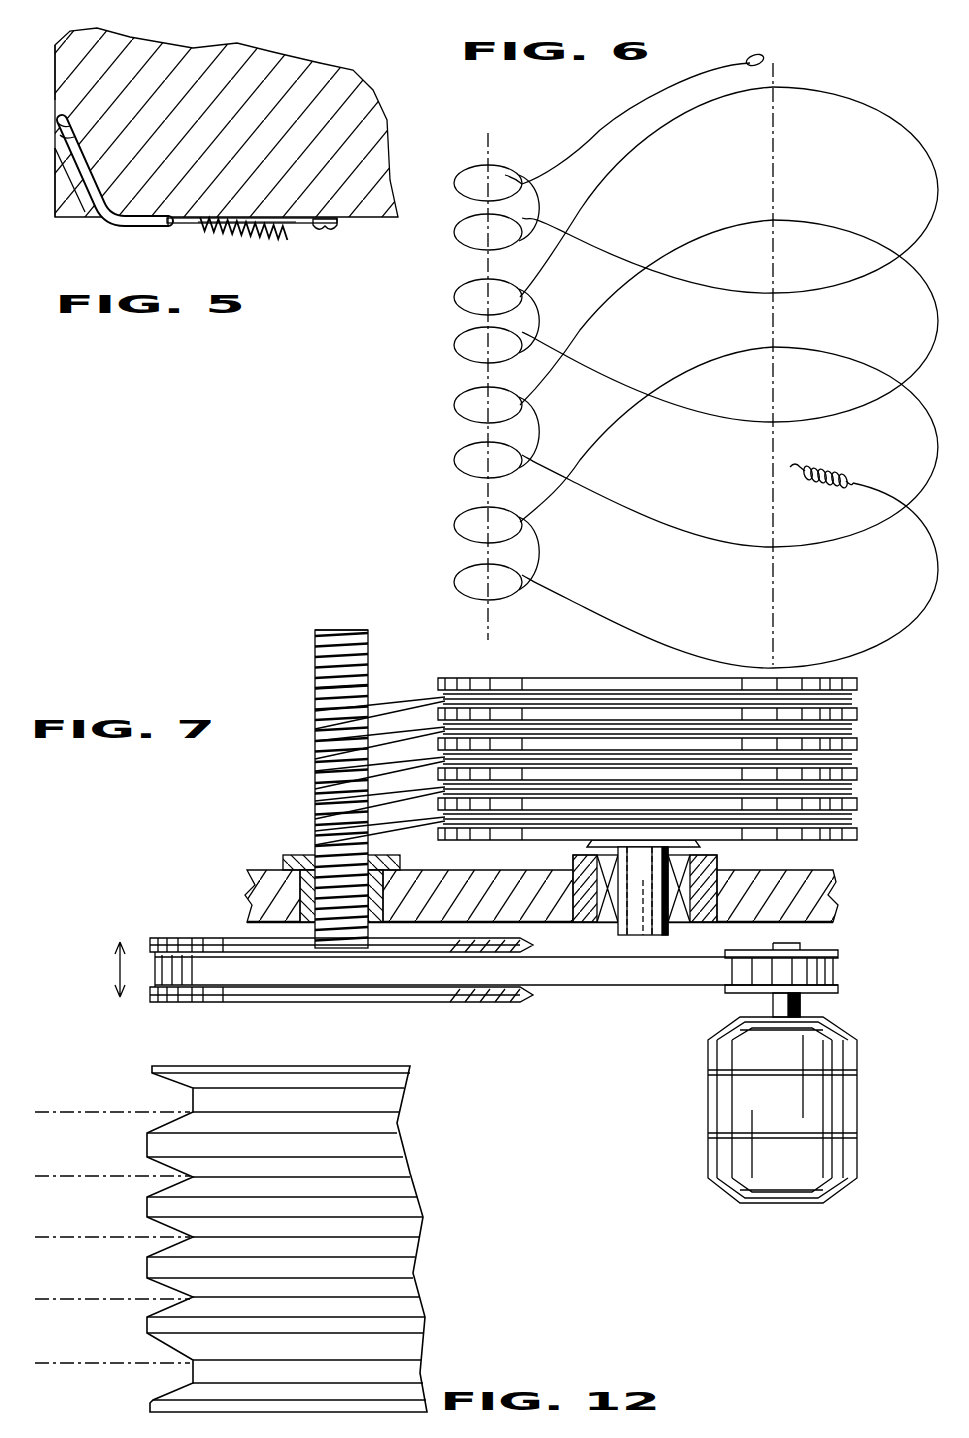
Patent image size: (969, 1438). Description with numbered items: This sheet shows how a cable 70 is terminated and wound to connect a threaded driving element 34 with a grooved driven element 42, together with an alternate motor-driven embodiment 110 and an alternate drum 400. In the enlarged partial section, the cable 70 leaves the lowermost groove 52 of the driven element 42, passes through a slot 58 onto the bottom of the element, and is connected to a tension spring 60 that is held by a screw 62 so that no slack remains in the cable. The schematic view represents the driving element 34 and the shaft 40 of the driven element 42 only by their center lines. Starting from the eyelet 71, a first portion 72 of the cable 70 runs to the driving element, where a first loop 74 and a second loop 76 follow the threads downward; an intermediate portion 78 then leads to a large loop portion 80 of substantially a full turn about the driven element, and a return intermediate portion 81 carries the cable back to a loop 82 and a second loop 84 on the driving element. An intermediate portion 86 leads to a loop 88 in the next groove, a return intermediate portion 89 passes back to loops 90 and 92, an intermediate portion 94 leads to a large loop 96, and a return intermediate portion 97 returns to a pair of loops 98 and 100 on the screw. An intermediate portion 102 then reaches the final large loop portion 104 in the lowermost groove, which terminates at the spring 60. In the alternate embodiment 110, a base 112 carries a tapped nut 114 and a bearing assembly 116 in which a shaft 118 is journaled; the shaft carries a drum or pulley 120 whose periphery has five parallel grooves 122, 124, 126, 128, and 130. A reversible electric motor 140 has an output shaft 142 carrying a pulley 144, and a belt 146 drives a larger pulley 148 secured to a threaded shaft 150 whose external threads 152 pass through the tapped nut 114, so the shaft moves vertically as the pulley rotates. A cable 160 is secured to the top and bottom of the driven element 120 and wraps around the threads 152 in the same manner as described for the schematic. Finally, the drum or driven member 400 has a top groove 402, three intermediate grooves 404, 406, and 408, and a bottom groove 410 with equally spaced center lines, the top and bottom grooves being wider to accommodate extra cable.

In FIG. 5, the driven element 42 is at (360, 96).
In FIG. 5, the groove 52 is at (58, 117).
In FIG. 5, the slot 58 is at (78, 222).
In FIG. 5, the tension spring 60 is at (255, 232).
In FIG. 6, the tension spring 60 is at (828, 470).
In FIG. 5, the screw 62 is at (336, 228).
In FIG. 6, the eyelet 71 is at (762, 57).
In FIG. 6, the cable 70 is at (610, 110).
In FIG. 6, the driving element 34 is at (490, 166).
In FIG. 6, the shaft 40 is at (778, 175).
In FIG. 6, the first portion 72 is at (538, 185).
In FIG. 6, the first loop 74 is at (460, 186).
In FIG. 6, the second loop 76 is at (460, 240).
In FIG. 6, the intermediate portion 78 is at (548, 219).
In FIG. 6, the loop portion 80 is at (893, 125).
In FIG. 6, the return intermediate portion 81 is at (546, 260).
In FIG. 6, the loop 82 is at (461, 302).
In FIG. 6, the second loop 84 is at (461, 350).
In FIG. 6, the intermediate portion 86 is at (550, 334).
In FIG. 6, the loop 88 is at (932, 315).
In FIG. 6, the return intermediate portion 89 is at (546, 370).
In FIG. 6, the loop 90 is at (460, 408).
In FIG. 6, the second loop 92 is at (460, 463).
In FIG. 6, the intermediate portion 94 is at (548, 463).
In FIG. 6, the loop 96 is at (675, 527).
In FIG. 6, the return intermediate portion 97 is at (548, 494).
In FIG. 6, the loop 98 is at (460, 528).
In FIG. 6, the loop 100 is at (460, 585).
In FIG. 6, the intermediate portion 102 is at (552, 588).
In FIG. 6, the final large loop portion 104 is at (930, 598).
In FIG. 7, the threaded shaft 150 is at (336, 630).
In FIG. 7, the alternate embodiment 110 is at (300, 672).
In FIG. 7, the external threads 152 is at (314, 688).
In FIG. 7, the cable 160 is at (422, 688).
In FIG. 7, the drum or pulley 120 is at (678, 742).
In FIG. 7, the groove 122 is at (858, 688).
In FIG. 7, the groove 124 is at (858, 720).
In FIG. 7, the groove 126 is at (858, 752).
In FIG. 7, the groove 128 is at (858, 784).
In FIG. 7, the groove 130 is at (858, 818).
In FIG. 7, the tapped nut 114 is at (284, 858).
In FIG. 7, the bearing assembly 116 is at (716, 865).
In FIG. 7, the base 112 is at (256, 890).
In FIG. 7, the shaft 118 is at (662, 938).
In FIG. 7, the pulley 144 is at (840, 953).
In FIG. 7, the output shaft 142 is at (805, 1010).
In FIG. 7, the belt 146 is at (606, 986).
In FIG. 7, the pulley 148 is at (198, 1003).
In FIG. 7, the reversible electric motor 140 is at (690, 1082).
In FIG. 12, the drum or driven member 400 is at (168, 1056).
In FIG. 12, the top groove 402 is at (160, 1088).
In FIG. 12, the intermediate groove 404 is at (155, 1183).
In FIG. 12, the intermediate groove 406 is at (155, 1244).
In FIG. 12, the intermediate groove 408 is at (155, 1306).
In FIG. 12, the bottom groove 410 is at (160, 1390).